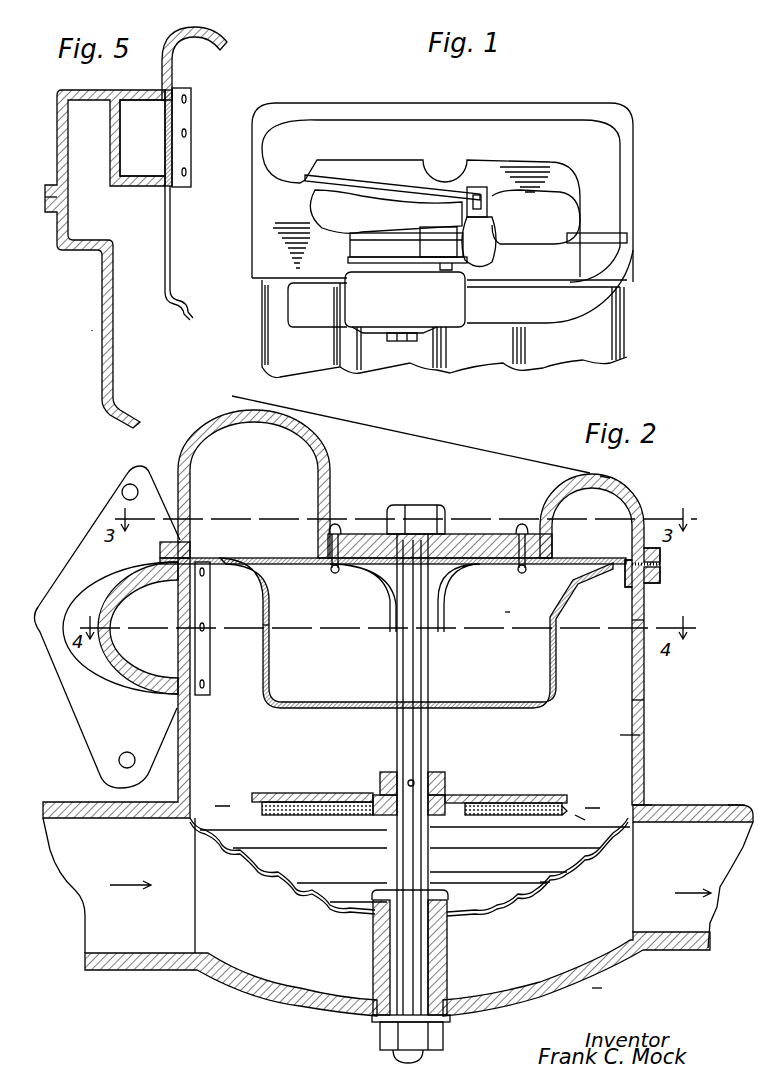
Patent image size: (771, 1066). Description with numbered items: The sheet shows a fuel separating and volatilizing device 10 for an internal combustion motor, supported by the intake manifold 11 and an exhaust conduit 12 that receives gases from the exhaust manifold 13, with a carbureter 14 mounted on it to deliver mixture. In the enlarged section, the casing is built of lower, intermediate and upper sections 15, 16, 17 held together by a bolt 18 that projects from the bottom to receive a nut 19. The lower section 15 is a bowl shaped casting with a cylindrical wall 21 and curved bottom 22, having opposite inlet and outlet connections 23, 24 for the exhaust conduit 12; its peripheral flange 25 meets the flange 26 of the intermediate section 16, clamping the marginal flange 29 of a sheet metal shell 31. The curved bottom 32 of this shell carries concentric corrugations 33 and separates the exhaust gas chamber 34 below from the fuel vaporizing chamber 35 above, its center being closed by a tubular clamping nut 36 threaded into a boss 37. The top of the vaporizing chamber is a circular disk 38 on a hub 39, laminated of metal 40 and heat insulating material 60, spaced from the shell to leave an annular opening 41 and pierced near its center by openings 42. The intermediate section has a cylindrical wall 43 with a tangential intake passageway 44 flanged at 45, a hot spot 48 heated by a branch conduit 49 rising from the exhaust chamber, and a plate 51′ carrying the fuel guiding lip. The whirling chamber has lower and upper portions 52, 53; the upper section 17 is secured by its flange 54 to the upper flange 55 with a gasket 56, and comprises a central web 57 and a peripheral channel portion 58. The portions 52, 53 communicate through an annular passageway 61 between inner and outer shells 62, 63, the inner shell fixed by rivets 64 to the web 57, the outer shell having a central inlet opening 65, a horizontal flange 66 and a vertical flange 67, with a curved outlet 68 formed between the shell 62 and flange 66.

In FIG. 1, the fuel separating and volatilizing device 10 is at (372, 246).
In FIG. 1, the intake manifold 11 is at (336, 218).
In FIG. 1, the exhaust conduit 12 is at (330, 300).
In FIG. 1, the exhaust manifold 13 is at (512, 133).
In FIG. 1, the carbureter 14 is at (472, 242).
In FIG. 2, the lower section 15 is at (650, 976).
In FIG. 2, the intermediate section 16 is at (650, 720).
In FIG. 2, the upper section 17 is at (640, 480).
In FIG. 2, the bolt 18 is at (429, 748).
In FIG. 2, the nut 19 is at (446, 1034).
In FIG. 2, the cylindrical wall 21 is at (195, 903).
In FIG. 2, the curved bottom 22 is at (598, 990).
In FIG. 2, the inlet connection 23 is at (62, 806).
In FIG. 2, the outlet connection 24 is at (734, 805).
In FIG. 2, the peripheral flange 25 is at (658, 812).
In FIG. 2, the flange 26 is at (650, 806).
In FIG. 2, the marginal flange 29 is at (586, 818).
In FIG. 2, the sheet metal shell 31 is at (196, 818).
In FIG. 2, the curved bottom 32 is at (545, 900).
In FIG. 2, the corrugations 33 is at (547, 880).
In FIG. 5, the exhaust gas chamber 34 is at (131, 350).
In FIG. 2, the exhaust gas chamber 34 is at (397, 974).
In FIG. 2, the fuel vaporizing chamber 35 is at (415, 864).
In FIG. 2, the tubular clamping nut 36 is at (376, 894).
In FIG. 2, the boss 37 is at (373, 953).
In FIG. 2, the circular disk 38 is at (512, 797).
In FIG. 2, the hub 39 is at (447, 790).
In FIG. 2, the metal laminations 40 is at (270, 818).
In FIG. 2, the annular opening 41 is at (221, 802).
In FIG. 2, the openings 42 is at (368, 818).
In FIG. 2, the cylindrical wall 43 is at (640, 620).
In FIG. 2, the intake passageway 44 is at (100, 660).
In FIG. 2, the flange 45 is at (92, 532).
In FIG. 5, the hot spot 48 is at (142, 138).
In FIG. 5, the branch conduit 49 is at (134, 276).
In FIG. 5, the plate 51′ is at (181, 145).
In FIG. 2, the plate 51′ is at (208, 645).
In FIG. 2, the lower portion of whirling chamber 52 is at (640, 742).
In FIG. 2, the upper portion of whirling chamber 53 is at (254, 484).
In FIG. 2, the flange 54 is at (662, 552).
In FIG. 2, the upper flange 55 is at (662, 574).
In FIG. 2, the gasket 56 is at (662, 566).
In FIG. 2, the central web 57 is at (480, 538).
In FIG. 2, the peripheral channel portion 58 is at (632, 503).
In FIG. 2, the heat insulating material 60 is at (568, 812).
In FIG. 2, the annular passageway 61 is at (505, 612).
In FIG. 2, the inner sheet metal shell 62 is at (366, 572).
In FIG. 2, the outer sheet metal shell 63 is at (270, 622).
In FIG. 2, the rivets 64 is at (341, 530).
In FIG. 2, the central inlet opening 65 is at (341, 710).
In FIG. 2, the horizontal flange 66 is at (200, 560).
In FIG. 2, the vertical flange 67 is at (625, 584).
In FIG. 2, the curved outlet 68 is at (240, 560).